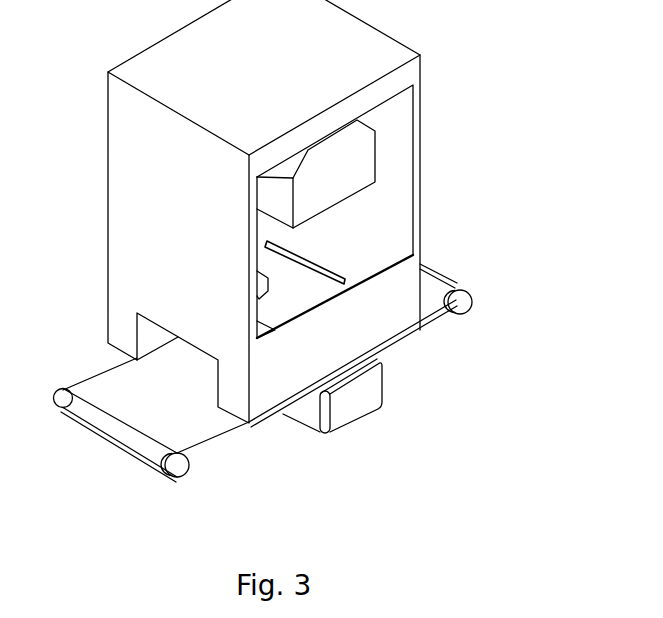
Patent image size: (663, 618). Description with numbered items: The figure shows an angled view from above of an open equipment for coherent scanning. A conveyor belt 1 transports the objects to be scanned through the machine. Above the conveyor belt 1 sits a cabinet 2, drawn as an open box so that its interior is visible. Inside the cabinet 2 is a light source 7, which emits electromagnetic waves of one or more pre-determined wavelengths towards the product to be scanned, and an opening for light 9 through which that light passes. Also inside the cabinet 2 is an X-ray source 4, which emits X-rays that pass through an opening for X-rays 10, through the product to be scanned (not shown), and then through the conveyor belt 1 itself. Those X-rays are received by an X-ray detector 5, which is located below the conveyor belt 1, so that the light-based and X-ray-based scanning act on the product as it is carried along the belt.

The conveyor belt 1 is at (462, 284).
The cabinet 2 is at (423, 191).
The X-ray source 4 is at (379, 155).
The X-ray detector 5 is at (369, 415).
The light source 7 is at (271, 282).
The opening for light 9 is at (277, 330).
The opening for X-rays 10 is at (337, 271).